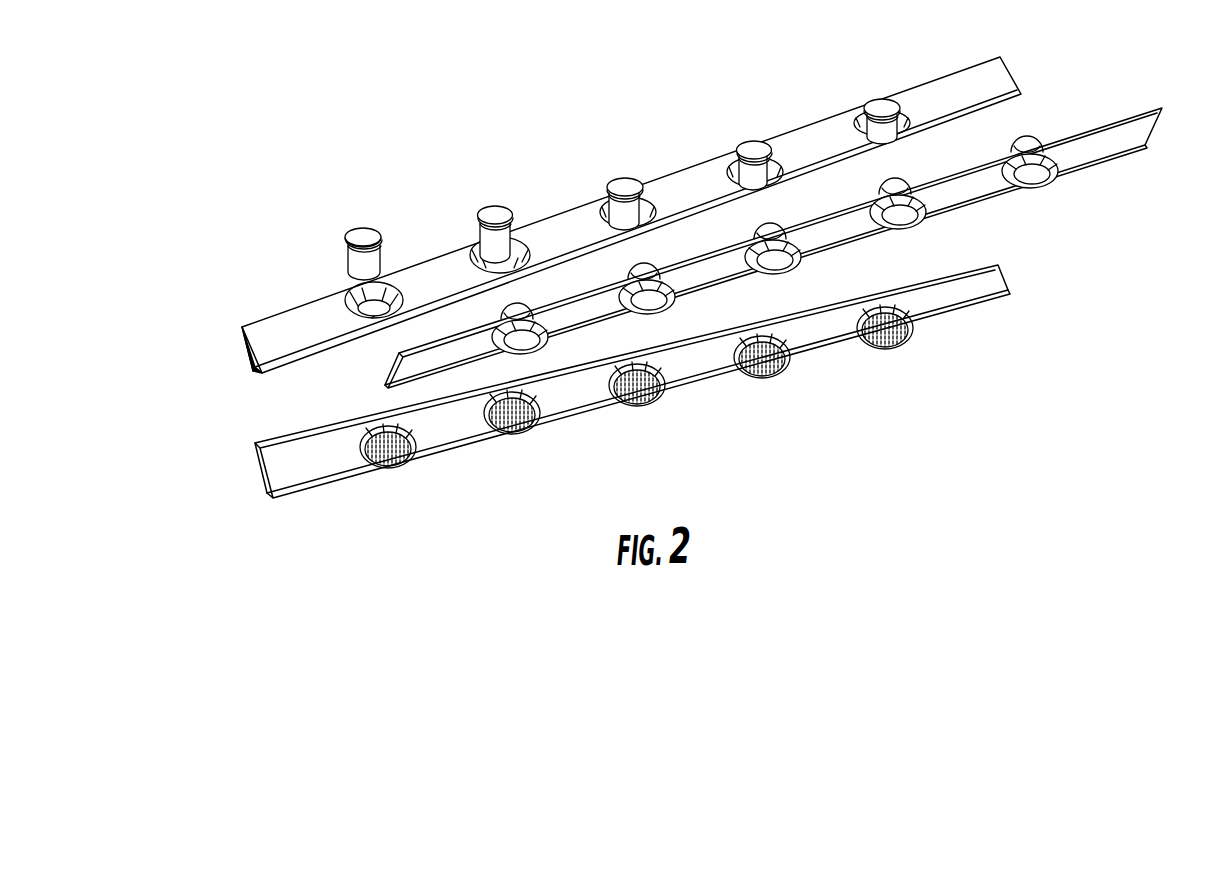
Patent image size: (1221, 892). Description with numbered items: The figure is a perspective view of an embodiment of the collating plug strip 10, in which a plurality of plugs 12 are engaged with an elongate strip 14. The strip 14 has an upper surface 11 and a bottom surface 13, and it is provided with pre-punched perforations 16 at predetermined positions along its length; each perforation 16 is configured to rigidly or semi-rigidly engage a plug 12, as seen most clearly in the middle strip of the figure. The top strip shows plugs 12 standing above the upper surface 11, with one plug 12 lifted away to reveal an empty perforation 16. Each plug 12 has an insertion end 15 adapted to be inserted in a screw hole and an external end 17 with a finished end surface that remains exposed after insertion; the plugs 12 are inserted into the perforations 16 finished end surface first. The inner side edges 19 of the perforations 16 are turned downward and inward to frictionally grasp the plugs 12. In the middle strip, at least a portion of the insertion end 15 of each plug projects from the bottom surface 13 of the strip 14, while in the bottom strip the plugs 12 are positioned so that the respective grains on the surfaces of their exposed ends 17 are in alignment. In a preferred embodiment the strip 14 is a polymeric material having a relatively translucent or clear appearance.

The collating plug strip 10 is at (258, 377).
The upper surface 11 is at (1103, 148).
The plug 12 is at (377, 232).
The bottom surface 13 is at (967, 82).
The elongate strip 14 is at (241, 350).
The insertion end 15 is at (884, 110).
The perforation 16 is at (377, 313).
The external end 17 is at (1028, 180).
The inner side edge 19 is at (1047, 158).